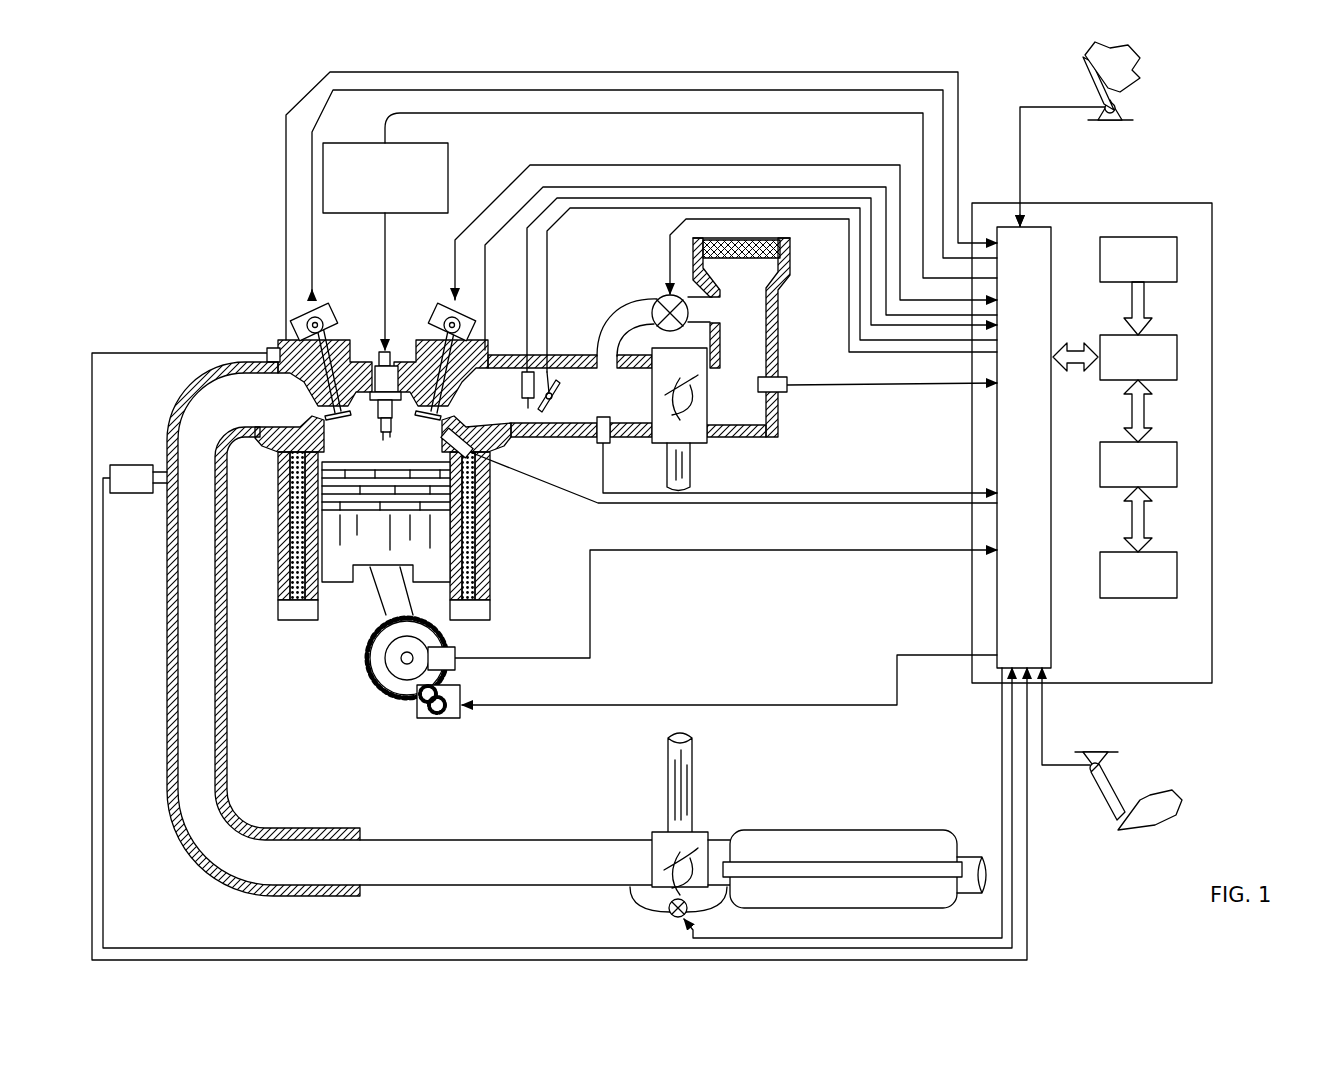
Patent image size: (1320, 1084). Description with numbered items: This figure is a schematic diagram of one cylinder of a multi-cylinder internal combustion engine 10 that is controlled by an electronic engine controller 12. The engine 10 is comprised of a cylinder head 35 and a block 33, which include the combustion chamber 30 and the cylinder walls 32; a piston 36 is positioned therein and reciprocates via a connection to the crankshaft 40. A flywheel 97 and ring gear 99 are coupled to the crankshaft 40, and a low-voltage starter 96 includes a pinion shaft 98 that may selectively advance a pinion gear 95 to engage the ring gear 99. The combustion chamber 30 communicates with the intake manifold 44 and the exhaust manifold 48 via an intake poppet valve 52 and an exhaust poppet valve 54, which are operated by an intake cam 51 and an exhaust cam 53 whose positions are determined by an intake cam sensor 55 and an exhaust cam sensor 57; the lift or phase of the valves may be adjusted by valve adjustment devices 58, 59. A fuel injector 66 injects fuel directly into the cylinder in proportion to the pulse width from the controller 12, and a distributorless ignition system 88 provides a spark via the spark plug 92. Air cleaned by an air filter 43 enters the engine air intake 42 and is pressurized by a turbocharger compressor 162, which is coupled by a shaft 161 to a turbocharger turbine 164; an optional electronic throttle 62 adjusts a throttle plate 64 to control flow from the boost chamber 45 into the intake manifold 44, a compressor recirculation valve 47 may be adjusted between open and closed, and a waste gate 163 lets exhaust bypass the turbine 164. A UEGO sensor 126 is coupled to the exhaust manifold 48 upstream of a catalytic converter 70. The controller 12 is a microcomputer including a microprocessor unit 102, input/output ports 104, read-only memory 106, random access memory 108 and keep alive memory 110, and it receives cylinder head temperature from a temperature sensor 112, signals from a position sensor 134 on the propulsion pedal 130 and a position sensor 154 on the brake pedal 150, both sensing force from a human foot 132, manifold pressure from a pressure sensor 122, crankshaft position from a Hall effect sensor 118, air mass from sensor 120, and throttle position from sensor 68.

The internal combustion engine 10 is at (268, 330).
The electronic engine controller 12 is at (1212, 205).
The combustion chamber 30 is at (387, 447).
The cylinder walls 32 is at (318, 605).
The block 33 is at (276, 488).
The cylinder head 35 is at (272, 340).
The piston 36 is at (372, 567).
The crankshaft 40 is at (385, 690).
The engine air intake 42 is at (615, 266).
The air filter 43 is at (748, 258).
The intake manifold 44 is at (520, 417).
The boost chamber 45 is at (624, 417).
The compressor recirculation valve 47 is at (662, 298).
The exhaust manifold 48 is at (258, 421).
The intake cam 51 is at (450, 300).
The intake poppet valve 52 is at (440, 414).
The exhaust cam 53 is at (325, 300).
The exhaust poppet valve 54 is at (325, 414).
The intake cam sensor 55 is at (468, 331).
The exhaust cam sensor 57 is at (297, 312).
The valve adjustment device 58 is at (332, 326).
The valve adjustment device 59 is at (466, 316).
The electronic throttle 62 is at (552, 398).
The throttle plate 64 is at (549, 410).
The fuel injector 66 is at (482, 452).
The throttle position sensor 68 is at (525, 378).
The catalytic converter 70 is at (780, 830).
The distributorless ignition system 88 is at (340, 143).
The spark plug 92 is at (380, 350).
The pinion gear 95 is at (433, 718).
The starter 96 is at (455, 718).
The flywheel 97 is at (372, 668).
The pinion shaft 98 is at (426, 703).
The ring gear 99 is at (395, 700).
The microprocessor unit 102 is at (1177, 358).
The input/output ports 104 is at (1051, 235).
The read-only memory 106 is at (1177, 256).
The random access memory 108 is at (1177, 464).
The keep alive memory 110 is at (1177, 574).
The temperature sensor 112 is at (268, 353).
The Hall effect sensor 118 is at (455, 656).
The air mass sensor 120 is at (786, 380).
The pressure sensor 122 is at (598, 440).
The Universal Exhaust Gas Oxygen sensor 126 is at (135, 465).
The propulsion pedal 130 is at (1092, 74).
The human foot 132 is at (1142, 62).
The position sensor 134 is at (1135, 108).
The brake pedal 150 is at (1120, 815).
The position sensor 154 is at (1085, 760).
The shaft 161 is at (668, 470).
The turbocharger compressor 162 is at (690, 442).
The waste gate 163 is at (670, 915).
The turbocharger turbine 164 is at (656, 832).